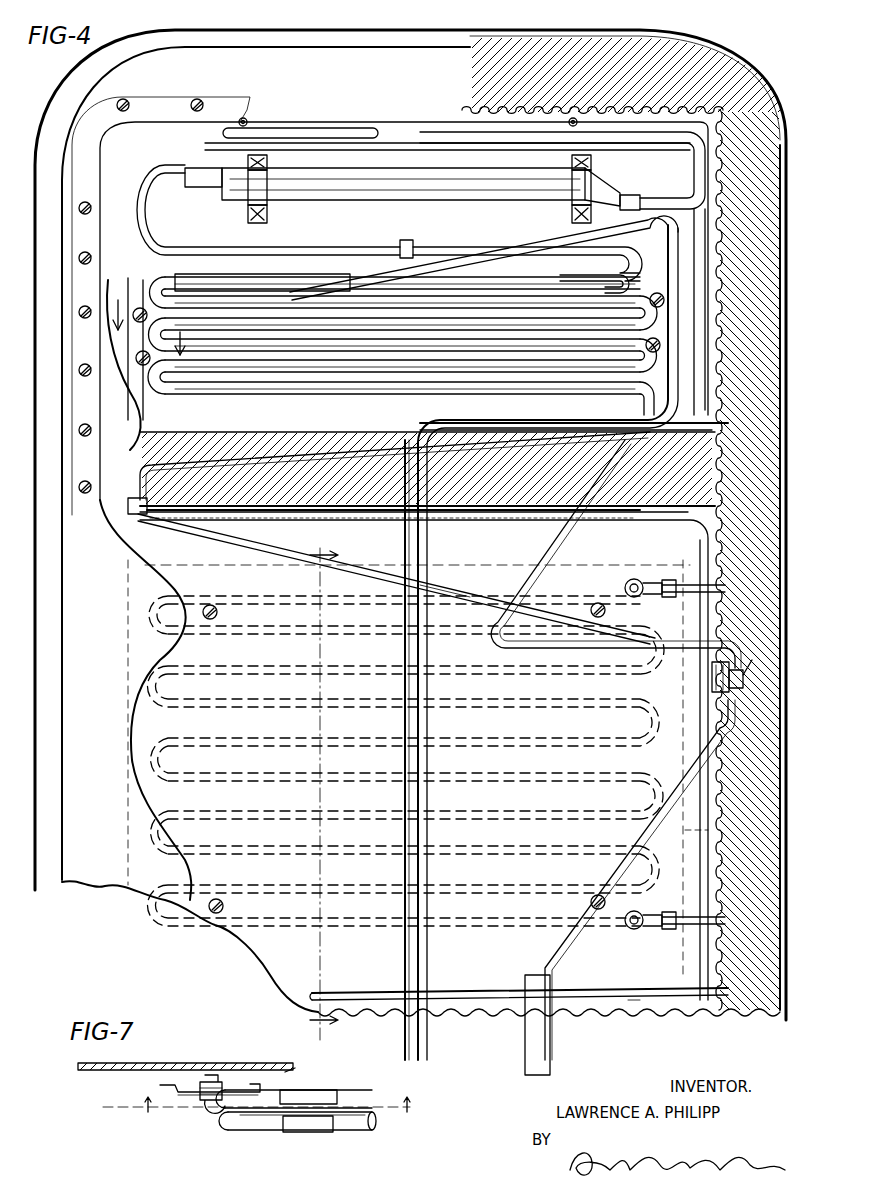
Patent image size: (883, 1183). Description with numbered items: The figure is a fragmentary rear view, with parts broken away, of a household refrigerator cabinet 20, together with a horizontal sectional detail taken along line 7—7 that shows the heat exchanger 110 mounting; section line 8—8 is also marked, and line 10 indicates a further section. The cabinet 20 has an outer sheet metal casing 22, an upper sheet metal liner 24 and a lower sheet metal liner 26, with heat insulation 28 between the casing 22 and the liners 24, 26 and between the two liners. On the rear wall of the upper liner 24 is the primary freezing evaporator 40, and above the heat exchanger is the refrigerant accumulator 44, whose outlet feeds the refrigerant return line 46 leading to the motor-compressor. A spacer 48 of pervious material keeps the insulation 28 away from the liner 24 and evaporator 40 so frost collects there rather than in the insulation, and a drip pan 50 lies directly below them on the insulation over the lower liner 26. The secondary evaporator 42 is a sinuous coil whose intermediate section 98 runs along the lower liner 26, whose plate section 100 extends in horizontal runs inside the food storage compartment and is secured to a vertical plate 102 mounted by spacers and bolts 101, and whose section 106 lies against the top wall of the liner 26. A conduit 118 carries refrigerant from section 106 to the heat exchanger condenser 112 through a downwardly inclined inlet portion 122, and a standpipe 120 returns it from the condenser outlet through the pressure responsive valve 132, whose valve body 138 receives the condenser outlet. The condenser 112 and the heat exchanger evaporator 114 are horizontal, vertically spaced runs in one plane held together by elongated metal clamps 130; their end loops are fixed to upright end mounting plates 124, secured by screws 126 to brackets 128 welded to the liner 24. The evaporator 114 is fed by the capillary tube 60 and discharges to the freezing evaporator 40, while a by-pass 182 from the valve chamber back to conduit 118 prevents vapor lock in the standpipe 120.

In FIG. 4, the cabinet 20 is at (768, 62).
In FIG. 4, the outer sheet metal casing 22 is at (185, 52).
In FIG. 4, the upper sheet metal container or liner 24 is at (390, 143).
In FIG. 7, the upper sheet metal container or liner 24 is at (250, 1060).
In FIG. 4, the lower sheet metal liner 26 is at (712, 790).
In FIG. 4, the heat insulation 28 is at (562, 36).
In FIG. 4, the primary refrigerating system evaporator 40 is at (318, 130).
In FIG. 4, the secondary refrigerating system evaporator 42 is at (380, 990).
In FIG. 4, the refrigerant accumulator 44 is at (455, 168).
In FIG. 4, the refrigerant return line 46 is at (304, 246).
In FIG. 4, the spacer 48 is at (548, 92).
In FIG. 4, the drip pan 50 is at (729, 424).
In FIG. 4, the metering or capillary tube 60 is at (490, 262).
In FIG. 4, the intermediate section of evaporator coil 98 is at (632, 1000).
In FIG. 4, the plate section of evaporator coil 100 is at (248, 640).
In FIG. 4, the spacers and bolts 101 is at (218, 610).
In FIG. 4, the plate 102 is at (712, 830).
In FIG. 4, the coil section 106 is at (212, 516).
In FIG. 7, the heat exchanger 110 is at (250, 1132).
In FIG. 4, the heat exchanger condenser 112 is at (172, 282).
In FIG. 7, the heat exchanger condenser 112 is at (365, 1124).
In FIG. 4, the heat exchanger evaporator 114 is at (572, 288).
In FIG. 7, the heat exchanger evaporator 114 is at (362, 1095).
In FIG. 4, the conduit 118 is at (262, 462).
In FIG. 4, the conduit or standpipe 120 is at (567, 530).
In FIG. 4, the inlet portion of heat exchanger condenser 122 is at (538, 245).
In FIG. 4, the end mounting plates 124 is at (138, 405).
In FIG. 7, the end mounting plates 124 is at (175, 1090).
In FIG. 4, the screws 126 is at (135, 285).
In FIG. 7, the screws 126 is at (205, 1108).
In FIG. 7, the brackets 128 is at (293, 1072).
In FIG. 4, the elongated metal clamps 130 is at (300, 285).
In FIG. 7, the elongated metal clamps 130 is at (305, 1132).
In FIG. 4, the control or pressure responsive valve 132 is at (742, 688).
In FIG. 4, the valve body 138 is at (748, 662).
In FIG. 4, the by-pass 182 is at (468, 598).
In FIG. 4, the section line 7- 7 is at (146, 333).
In FIG. 7, the section line 8- 8 is at (266, 1107).
In FIG. 4, the section line 10- 10 is at (323, 791).